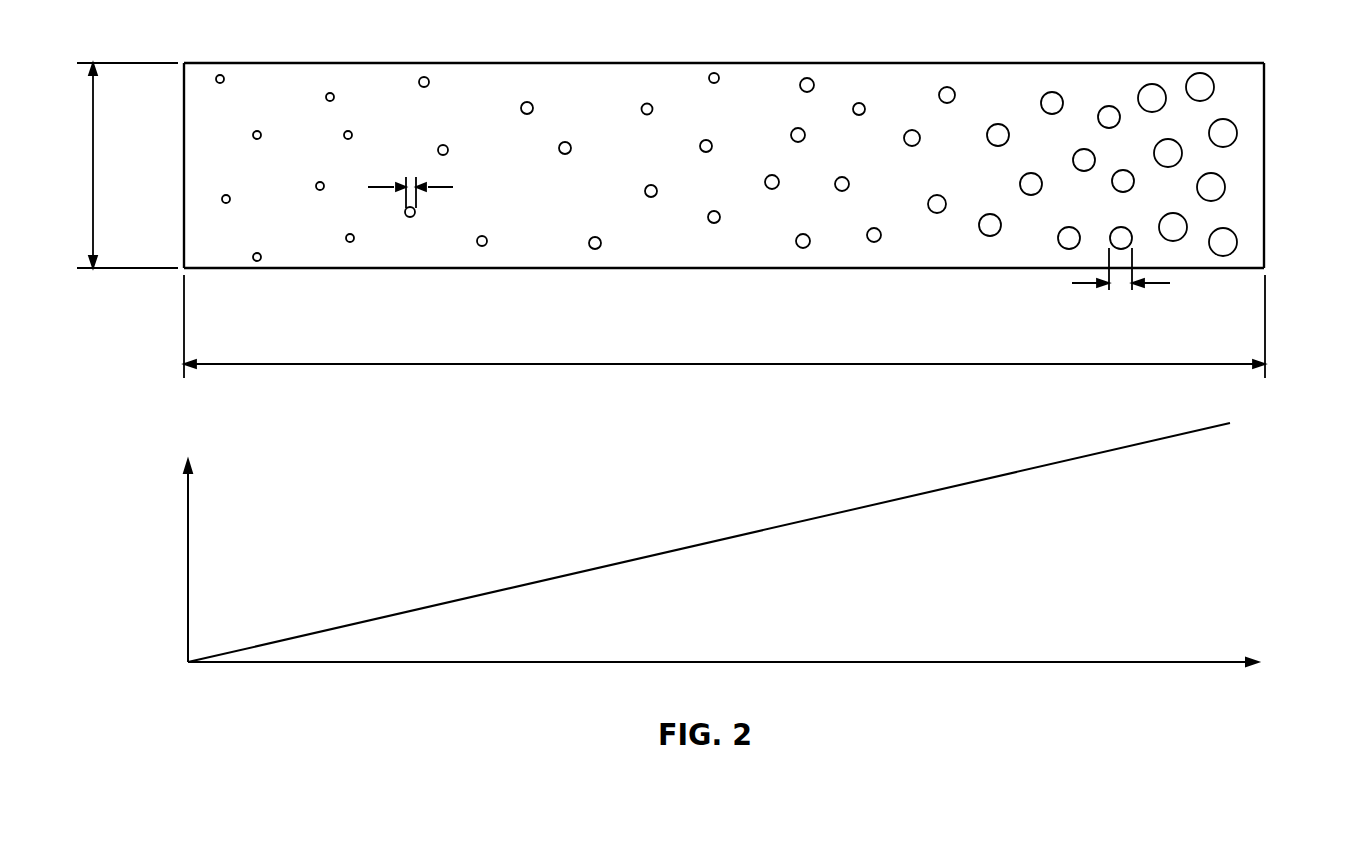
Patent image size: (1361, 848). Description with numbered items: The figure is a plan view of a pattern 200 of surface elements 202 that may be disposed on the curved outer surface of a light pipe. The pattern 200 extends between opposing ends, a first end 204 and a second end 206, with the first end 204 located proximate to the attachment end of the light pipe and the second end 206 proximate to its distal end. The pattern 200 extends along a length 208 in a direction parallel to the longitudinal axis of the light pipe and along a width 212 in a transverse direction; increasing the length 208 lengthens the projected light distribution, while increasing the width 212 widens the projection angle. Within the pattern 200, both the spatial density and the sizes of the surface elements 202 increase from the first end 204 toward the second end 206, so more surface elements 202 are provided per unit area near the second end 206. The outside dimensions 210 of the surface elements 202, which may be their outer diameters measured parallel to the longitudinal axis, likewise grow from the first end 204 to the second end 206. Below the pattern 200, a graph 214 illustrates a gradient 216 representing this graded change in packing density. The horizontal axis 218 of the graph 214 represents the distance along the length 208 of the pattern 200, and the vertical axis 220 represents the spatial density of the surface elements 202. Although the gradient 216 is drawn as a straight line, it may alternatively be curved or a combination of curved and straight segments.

The pattern 200 is at (1090, 63).
The surface elements 202 is at (713, 73).
The first end 204 is at (184, 153).
The second end 206 is at (1264, 130).
The length 208 is at (700, 364).
The outside dimensions 210 is at (436, 187).
The width 212 is at (93, 148).
The graph 214 is at (694, 564).
The gradient 216 is at (1042, 468).
The horizontal axis 218 is at (1187, 662).
The vertical axis 220 is at (188, 507).